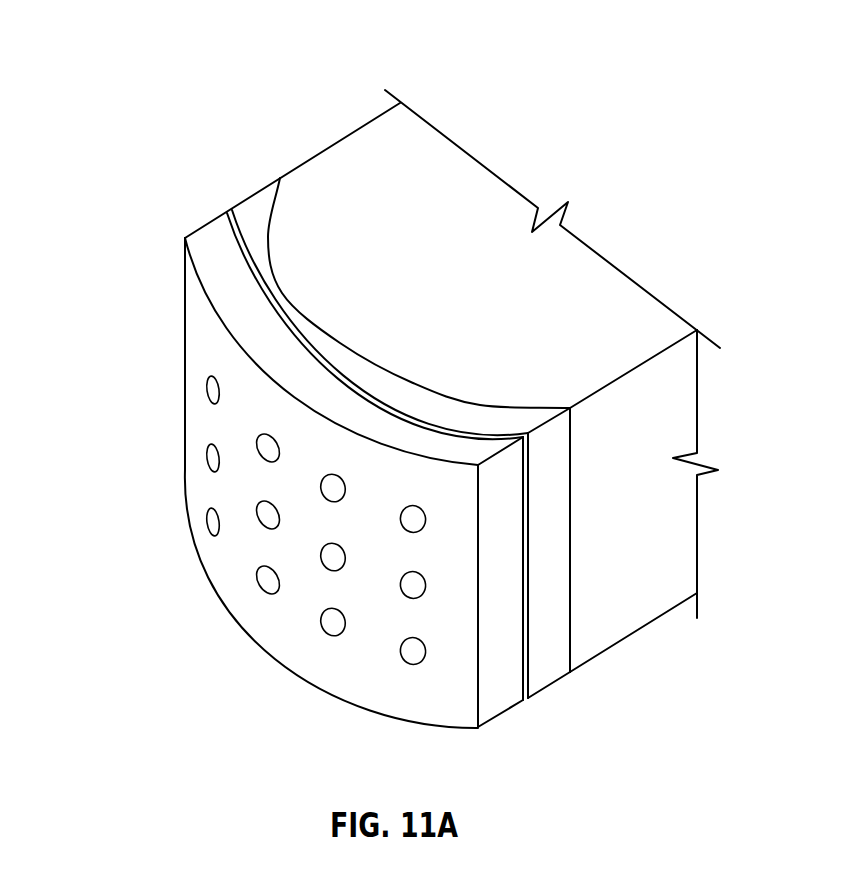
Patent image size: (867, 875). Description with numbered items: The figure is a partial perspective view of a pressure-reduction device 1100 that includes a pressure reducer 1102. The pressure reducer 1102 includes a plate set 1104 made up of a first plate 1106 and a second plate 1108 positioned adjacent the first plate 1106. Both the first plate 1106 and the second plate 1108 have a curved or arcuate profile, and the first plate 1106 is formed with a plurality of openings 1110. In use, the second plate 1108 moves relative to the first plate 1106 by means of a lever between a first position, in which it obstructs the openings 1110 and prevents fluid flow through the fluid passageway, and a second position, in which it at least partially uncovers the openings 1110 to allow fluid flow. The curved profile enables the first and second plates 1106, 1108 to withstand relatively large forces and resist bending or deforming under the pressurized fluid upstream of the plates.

The pressure-reduction device 1100 is at (169, 108).
The pressure reducer 1102 is at (273, 133).
The plate set 1104 is at (201, 185).
The first plate 1106 is at (212, 352).
The second plate 1108 is at (343, 347).
The openings 1110 is at (198, 388).